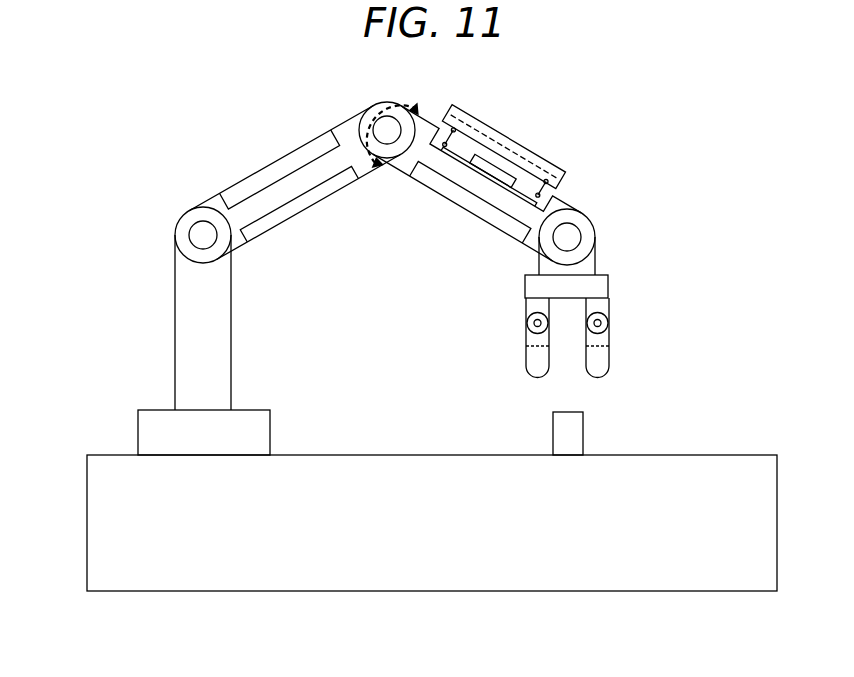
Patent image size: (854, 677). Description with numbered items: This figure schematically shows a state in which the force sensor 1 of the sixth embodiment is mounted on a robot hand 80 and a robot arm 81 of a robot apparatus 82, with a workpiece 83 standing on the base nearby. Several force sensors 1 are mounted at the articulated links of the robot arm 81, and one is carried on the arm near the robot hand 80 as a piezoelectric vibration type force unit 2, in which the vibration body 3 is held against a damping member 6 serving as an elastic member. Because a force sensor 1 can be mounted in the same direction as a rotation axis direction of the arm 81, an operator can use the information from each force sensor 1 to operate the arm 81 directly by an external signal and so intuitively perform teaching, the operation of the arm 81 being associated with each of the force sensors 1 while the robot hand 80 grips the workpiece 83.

The force sensor 1 is at (307, 150).
The piezoelectric vibration type force unit 2 is at (495, 165).
The vibration body 3 is at (502, 177).
The damping member 6 is at (478, 128).
The robot hand 80 is at (613, 325).
The robot arm 81 is at (190, 193).
The robot apparatus 82 is at (130, 428).
The workpiece 83 is at (583, 418).